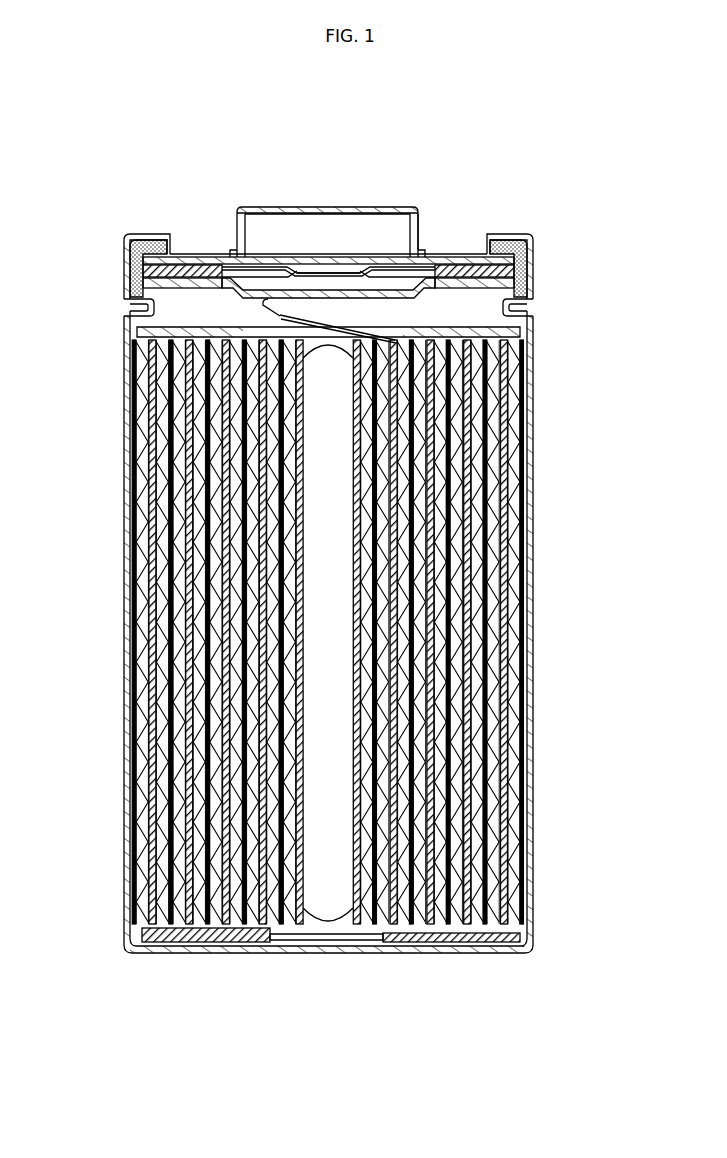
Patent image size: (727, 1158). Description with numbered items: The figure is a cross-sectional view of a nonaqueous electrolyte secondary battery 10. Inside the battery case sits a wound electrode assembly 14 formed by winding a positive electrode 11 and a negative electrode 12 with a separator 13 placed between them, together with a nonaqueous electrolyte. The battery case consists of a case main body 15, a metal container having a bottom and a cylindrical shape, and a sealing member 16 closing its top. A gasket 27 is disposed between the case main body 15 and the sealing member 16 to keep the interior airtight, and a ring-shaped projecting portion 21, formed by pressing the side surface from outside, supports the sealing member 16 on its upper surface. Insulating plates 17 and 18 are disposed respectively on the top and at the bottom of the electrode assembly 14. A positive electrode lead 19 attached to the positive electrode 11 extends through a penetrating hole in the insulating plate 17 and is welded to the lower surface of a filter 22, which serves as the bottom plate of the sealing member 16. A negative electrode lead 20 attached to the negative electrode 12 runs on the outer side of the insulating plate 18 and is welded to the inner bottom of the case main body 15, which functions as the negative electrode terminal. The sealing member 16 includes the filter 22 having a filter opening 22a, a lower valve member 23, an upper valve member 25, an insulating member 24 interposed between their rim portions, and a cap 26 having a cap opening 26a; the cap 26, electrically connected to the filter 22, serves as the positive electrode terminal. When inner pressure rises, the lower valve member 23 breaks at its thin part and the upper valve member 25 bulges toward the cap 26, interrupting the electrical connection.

The nonaqueous electrolyte secondary battery 10 is at (522, 116).
The positive electrode 11 is at (497, 696).
The negative electrode 12 is at (512, 718).
The separator 13 is at (503, 743).
The wound electrode assembly 14 is at (606, 680).
The case main body 15 is at (535, 237).
The sealing member 16 is at (417, 207).
The insulating plate 17 is at (528, 343).
The insulating plate 18 is at (527, 945).
The positive electrode lead 19 is at (265, 318).
The negative electrode lead 20 is at (142, 934).
The projecting portion 21 is at (128, 311).
The filter 22 is at (325, 291).
The filter opening 22a is at (374, 273).
The lower valve member 23 is at (247, 279).
The insulating member 24 is at (188, 257).
The upper valve member 25 is at (283, 266).
The cap 26 is at (398, 226).
The cap opening 26a is at (420, 222).
The gasket 27 is at (530, 262).